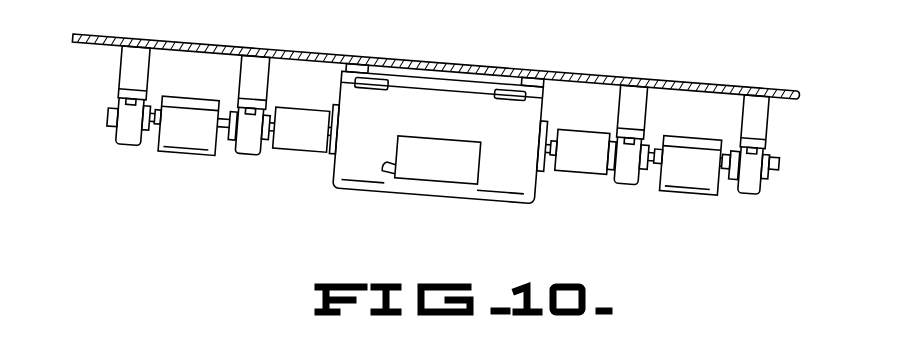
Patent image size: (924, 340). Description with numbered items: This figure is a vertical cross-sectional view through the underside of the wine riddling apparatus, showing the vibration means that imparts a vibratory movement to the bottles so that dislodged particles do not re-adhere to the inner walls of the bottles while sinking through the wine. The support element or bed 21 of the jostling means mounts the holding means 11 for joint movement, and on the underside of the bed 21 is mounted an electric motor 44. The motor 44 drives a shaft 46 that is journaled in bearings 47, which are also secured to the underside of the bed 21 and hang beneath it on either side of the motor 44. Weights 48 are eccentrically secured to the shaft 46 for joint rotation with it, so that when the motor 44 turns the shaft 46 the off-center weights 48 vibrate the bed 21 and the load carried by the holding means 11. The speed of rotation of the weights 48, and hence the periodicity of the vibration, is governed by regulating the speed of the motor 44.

The holding means 11 is at (590, 63).
The support element or bed 21 is at (306, 51).
The electric motor 44 is at (456, 131).
The shaft 46 is at (108, 116).
The bearings 47 is at (130, 144).
The weights 48 is at (203, 158).